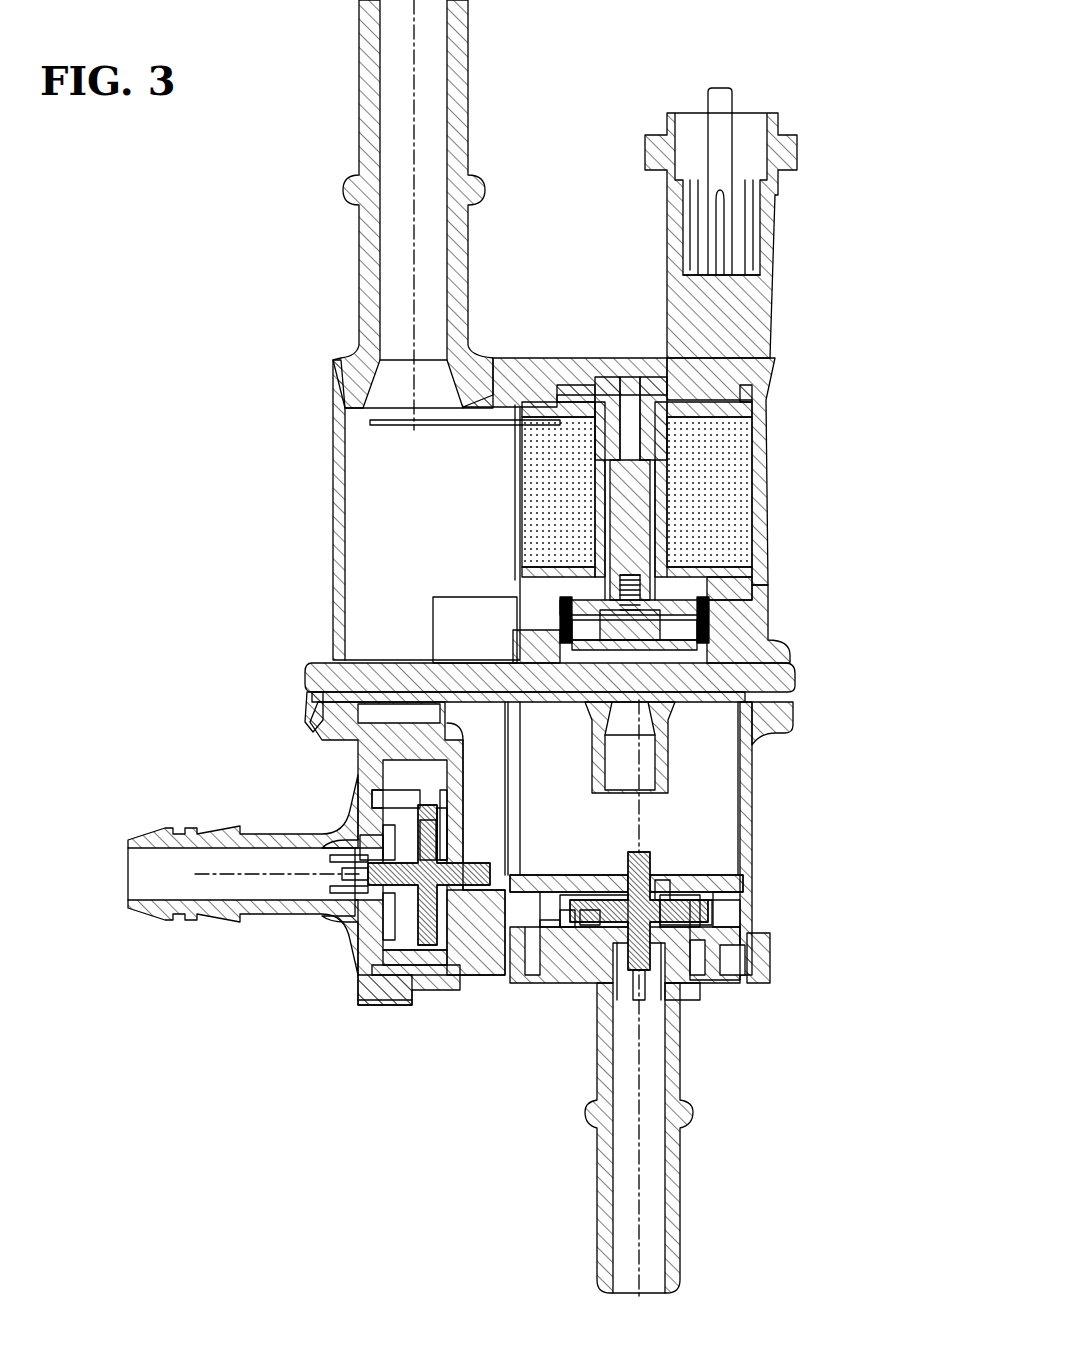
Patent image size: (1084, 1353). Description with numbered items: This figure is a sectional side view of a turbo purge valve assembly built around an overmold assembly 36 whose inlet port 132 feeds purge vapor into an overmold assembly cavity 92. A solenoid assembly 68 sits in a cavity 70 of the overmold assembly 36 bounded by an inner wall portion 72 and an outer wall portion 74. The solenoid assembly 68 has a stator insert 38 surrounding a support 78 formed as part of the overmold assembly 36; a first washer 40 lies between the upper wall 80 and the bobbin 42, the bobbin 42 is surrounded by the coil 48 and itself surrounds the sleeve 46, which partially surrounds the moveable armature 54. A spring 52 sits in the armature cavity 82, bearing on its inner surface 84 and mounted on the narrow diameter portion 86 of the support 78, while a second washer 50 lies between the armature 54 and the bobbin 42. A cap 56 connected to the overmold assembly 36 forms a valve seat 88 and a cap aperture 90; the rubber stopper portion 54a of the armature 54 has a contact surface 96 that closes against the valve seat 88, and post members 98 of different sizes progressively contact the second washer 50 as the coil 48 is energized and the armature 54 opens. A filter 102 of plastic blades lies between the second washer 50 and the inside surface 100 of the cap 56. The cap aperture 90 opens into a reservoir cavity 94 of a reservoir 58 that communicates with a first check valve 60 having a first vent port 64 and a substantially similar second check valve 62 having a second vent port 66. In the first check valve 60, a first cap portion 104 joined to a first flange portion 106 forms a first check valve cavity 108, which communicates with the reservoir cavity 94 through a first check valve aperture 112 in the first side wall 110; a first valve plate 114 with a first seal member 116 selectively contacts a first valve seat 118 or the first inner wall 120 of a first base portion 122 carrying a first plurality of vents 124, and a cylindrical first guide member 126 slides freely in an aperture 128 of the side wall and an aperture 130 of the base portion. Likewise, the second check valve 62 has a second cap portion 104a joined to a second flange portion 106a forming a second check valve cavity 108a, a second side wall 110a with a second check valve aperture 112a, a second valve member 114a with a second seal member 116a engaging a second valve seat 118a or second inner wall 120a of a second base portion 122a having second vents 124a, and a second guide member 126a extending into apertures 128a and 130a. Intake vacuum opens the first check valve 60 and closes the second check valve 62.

The overmold assembly 36 is at (765, 385).
The stator insert 38 is at (612, 412).
The first washer 40 is at (565, 385).
The bobbin 42 is at (525, 445).
The sleeve 46 is at (668, 372).
The coil 48 is at (728, 436).
The second washer 50 is at (705, 598).
The spring 52 is at (705, 608).
The armature 54 is at (745, 532).
The stopper portion 54a is at (705, 642).
The cap 56 is at (308, 680).
The reservoir 58 is at (752, 808).
The first check valve 60 is at (428, 985).
The second check valve 62 is at (752, 890).
The first vent port 64 is at (250, 920).
The second vent port 66 is at (680, 1225).
The solenoid assembly 68 is at (514, 486).
The cavity 70 is at (534, 525).
The inner wall portion 72 is at (522, 438).
The outer wall portion 74 is at (745, 468).
The support 78 is at (658, 492).
The upper wall 80 is at (648, 400).
The cavity 82 is at (608, 508).
The inner surface 84 is at (705, 620).
The narrow diameter portion 86 is at (628, 600).
The valve seat 88 is at (580, 702).
The cap aperture 90 is at (668, 702).
The overmold assembly cavity 92 is at (372, 592).
The reservoir cavity 94 is at (752, 865).
The contact surface 96 is at (792, 715).
The post members 98 is at (560, 628).
The inside surface 100 is at (372, 662).
The filter 102 is at (795, 680).
The first cap portion 104 is at (390, 1005).
The second cap portion 104a is at (765, 935).
The first flange portion 106 is at (425, 990).
The second flange portion 106a is at (752, 955).
The first check valve cavity 108 is at (400, 800).
The second check valve cavity 108a is at (680, 985).
The first side wall 110 is at (440, 790).
The second side wall 110a is at (575, 898).
The first check valve aperture 112 is at (450, 840).
The second check valve aperture 112a is at (665, 860).
The first valve plate 114 is at (440, 842).
The second valve member 114a is at (658, 880).
The first seal member 116 is at (430, 800).
The second seal member 116a is at (600, 930).
The first valve seat 118 is at (440, 950).
The second valve seat 118a is at (618, 935).
The first inner wall 120 is at (362, 948).
The second inner wall 120a is at (685, 990).
The first base portion 122 is at (370, 845).
The second base portion 122a is at (680, 1000).
The first plurality of vents 124 is at (332, 889).
The second plurality of vents 124a is at (650, 1000).
The first guide member 126 is at (380, 840).
The second guide member 126a is at (625, 940).
The aperture 128 is at (465, 887).
The aperture 128a is at (636, 860).
The aperture 130 is at (380, 905).
The aperture 130a is at (630, 950).
The inlet port 132 is at (359, 98).